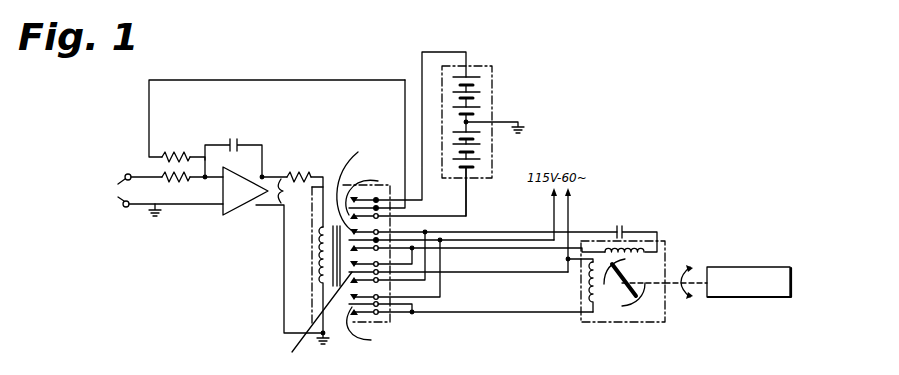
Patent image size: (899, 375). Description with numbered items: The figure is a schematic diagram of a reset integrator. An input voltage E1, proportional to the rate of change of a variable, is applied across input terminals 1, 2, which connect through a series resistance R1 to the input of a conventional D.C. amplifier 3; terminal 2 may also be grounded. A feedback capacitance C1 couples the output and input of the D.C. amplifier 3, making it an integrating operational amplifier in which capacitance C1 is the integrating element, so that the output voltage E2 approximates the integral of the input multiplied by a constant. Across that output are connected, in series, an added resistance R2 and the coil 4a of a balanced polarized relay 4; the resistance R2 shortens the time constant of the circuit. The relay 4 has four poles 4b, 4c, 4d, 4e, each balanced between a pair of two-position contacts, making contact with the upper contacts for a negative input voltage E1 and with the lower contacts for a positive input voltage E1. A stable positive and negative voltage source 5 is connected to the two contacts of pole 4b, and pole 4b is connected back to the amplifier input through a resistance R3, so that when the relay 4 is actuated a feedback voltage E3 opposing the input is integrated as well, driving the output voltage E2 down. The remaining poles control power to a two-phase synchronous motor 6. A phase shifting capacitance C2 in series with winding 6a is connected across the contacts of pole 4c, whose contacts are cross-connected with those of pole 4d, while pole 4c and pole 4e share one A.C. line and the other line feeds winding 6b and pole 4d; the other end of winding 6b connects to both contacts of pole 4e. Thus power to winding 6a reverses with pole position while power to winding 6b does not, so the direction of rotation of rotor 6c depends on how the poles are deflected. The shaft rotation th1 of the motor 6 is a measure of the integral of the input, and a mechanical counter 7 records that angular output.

The input terminal 1 is at (125, 175).
The input terminal 2 is at (123, 207).
The D.C. amplifier 3 is at (239, 199).
The balanced polarized relay 4 is at (337, 323).
The relay coil 4a is at (316, 266).
The relay pole 4b is at (371, 192).
The relay pole 4c is at (356, 187).
The relay pole 4d is at (317, 320).
The relay pole 4e is at (370, 328).
The positive and negative voltage source 5 is at (493, 97).
The synchronous motor 6 is at (654, 320).
The motor winding 6a is at (650, 256).
The motor winding 6b is at (597, 309).
The rotor 6c is at (615, 300).
The mechanical counter 7 is at (752, 292).
The series resistance R1 is at (176, 185).
The added resistance R2 is at (292, 191).
The feedback resistance R3 is at (277, 128).
The integrating capacitance C1 is at (240, 142).
The phase shifting capacitance C2 is at (620, 226).
The input voltage E1 is at (112, 190).
The output voltage E2 is at (289, 256).
The feedback voltage E3 is at (493, 122).
The angular output th1 is at (688, 290).